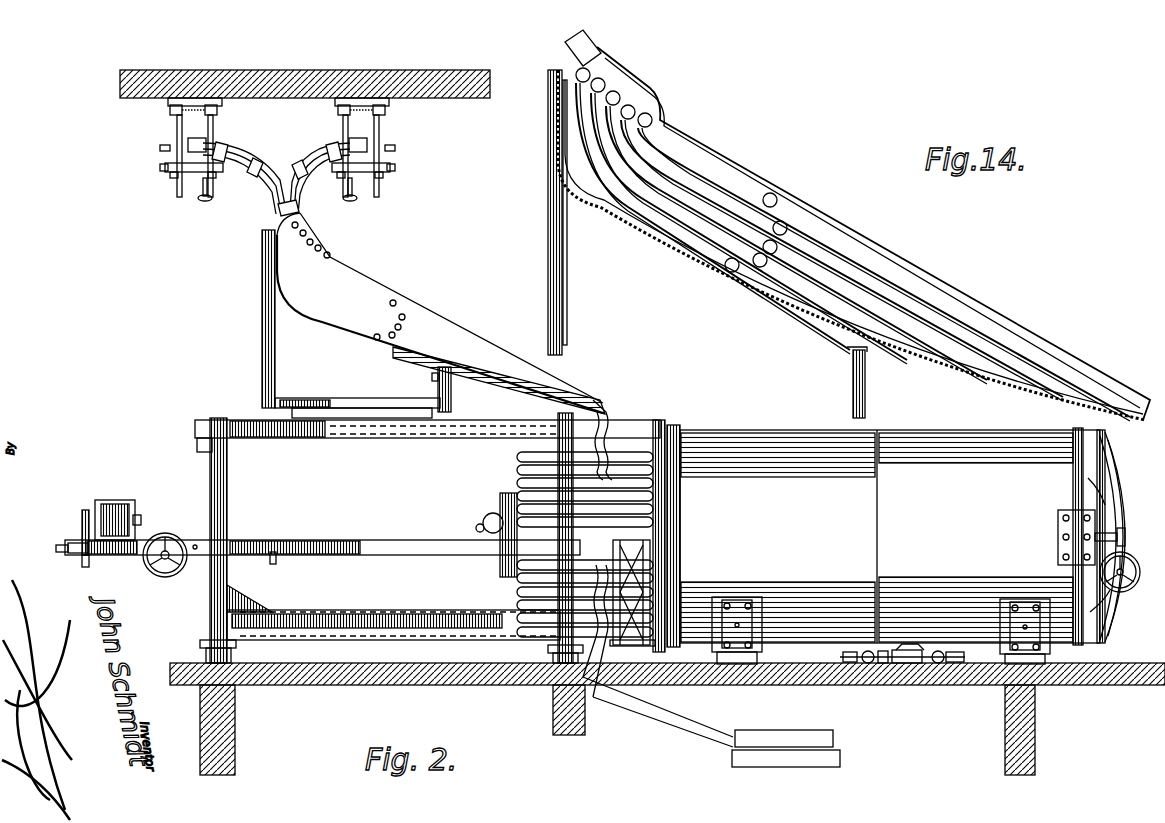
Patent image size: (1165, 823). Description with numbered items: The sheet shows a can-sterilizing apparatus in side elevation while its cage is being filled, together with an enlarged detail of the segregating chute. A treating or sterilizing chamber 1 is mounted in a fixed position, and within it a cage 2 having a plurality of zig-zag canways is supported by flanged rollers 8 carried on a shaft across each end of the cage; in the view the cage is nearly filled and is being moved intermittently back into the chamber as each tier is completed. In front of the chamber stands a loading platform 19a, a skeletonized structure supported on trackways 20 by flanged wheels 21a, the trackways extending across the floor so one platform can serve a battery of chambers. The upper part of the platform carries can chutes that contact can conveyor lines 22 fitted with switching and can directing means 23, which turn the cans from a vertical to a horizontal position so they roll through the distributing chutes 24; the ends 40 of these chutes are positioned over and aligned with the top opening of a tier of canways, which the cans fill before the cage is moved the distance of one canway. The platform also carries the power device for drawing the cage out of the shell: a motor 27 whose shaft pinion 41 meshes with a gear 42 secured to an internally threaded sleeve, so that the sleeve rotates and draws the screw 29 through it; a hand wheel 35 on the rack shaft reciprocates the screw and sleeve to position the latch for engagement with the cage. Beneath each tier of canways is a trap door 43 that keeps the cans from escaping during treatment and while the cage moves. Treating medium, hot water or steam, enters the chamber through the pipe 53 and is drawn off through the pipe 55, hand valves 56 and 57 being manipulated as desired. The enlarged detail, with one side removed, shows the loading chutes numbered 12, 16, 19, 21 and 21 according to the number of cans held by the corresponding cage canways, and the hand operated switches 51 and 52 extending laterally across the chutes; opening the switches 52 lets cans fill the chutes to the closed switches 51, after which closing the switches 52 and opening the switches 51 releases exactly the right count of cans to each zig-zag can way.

In FIG. 2, the treating or sterilizing chamber 1 is at (896, 542).
In FIG. 2, the cage 2 is at (538, 474).
In FIG. 2, the flanged rollers 8 is at (486, 518).
In FIG. 14, the loading chute 12 is at (884, 274).
In FIG. 14, the loading chute 16 is at (842, 260).
In FIG. 14, the loading chute 19 is at (796, 245).
In FIG. 2, the loading platform 19a is at (385, 618).
In FIG. 2, the trackways 20 is at (246, 690).
In FIG. 14, the loading chute 21 is at (741, 223).
In FIG. 2, the flanged wheels 21a is at (210, 655).
In FIG. 2, the can conveyor lines 22 is at (392, 170).
In FIG. 2, the switching and can directing means 23 is at (322, 160).
In FIG. 2, the distributing chutes 24 is at (362, 300).
In FIG. 14, the distributing chutes 24 is at (893, 258).
In FIG. 2, the motor 27 is at (127, 508).
In FIG. 2, the screw 29 is at (62, 546).
In FIG. 2, the hand wheel 35 is at (168, 578).
In FIG. 2, the ends of the distributing chutes 40 is at (628, 452).
In FIG. 2, the pinion 41 is at (84, 518).
In FIG. 2, the gear 42 is at (86, 566).
In FIG. 2, the trap door 43 is at (598, 648).
In FIG. 14, the hand operated switches 51 is at (786, 242).
In FIG. 14, the switches 52 is at (606, 92).
In FIG. 2, the pipe 53 is at (958, 666).
In FIG. 2, the pipe 55 is at (848, 666).
In FIG. 2, the hand valve 56 is at (934, 666).
In FIG. 2, the hand valve 57 is at (870, 666).